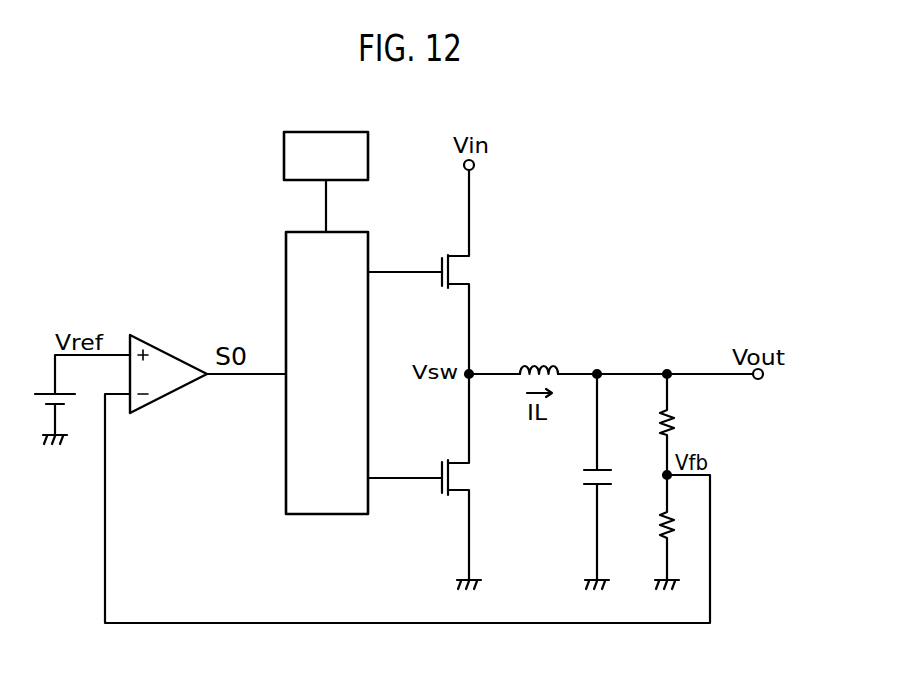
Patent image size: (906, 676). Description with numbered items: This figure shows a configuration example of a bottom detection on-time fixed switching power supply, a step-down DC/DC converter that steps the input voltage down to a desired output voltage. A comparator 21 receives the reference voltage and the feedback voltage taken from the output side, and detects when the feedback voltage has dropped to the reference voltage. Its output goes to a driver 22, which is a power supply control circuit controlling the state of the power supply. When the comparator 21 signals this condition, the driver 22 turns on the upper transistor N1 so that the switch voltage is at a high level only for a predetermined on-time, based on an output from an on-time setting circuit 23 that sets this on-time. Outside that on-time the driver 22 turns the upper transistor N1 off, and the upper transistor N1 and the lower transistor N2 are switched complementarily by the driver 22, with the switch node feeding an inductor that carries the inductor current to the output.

The comparator 21 is at (165, 348).
The driver 22 is at (351, 232).
The on-time setting circuit 23 is at (351, 132).
The upper transistor N1 is at (467, 273).
The lower transistor N2 is at (467, 479).